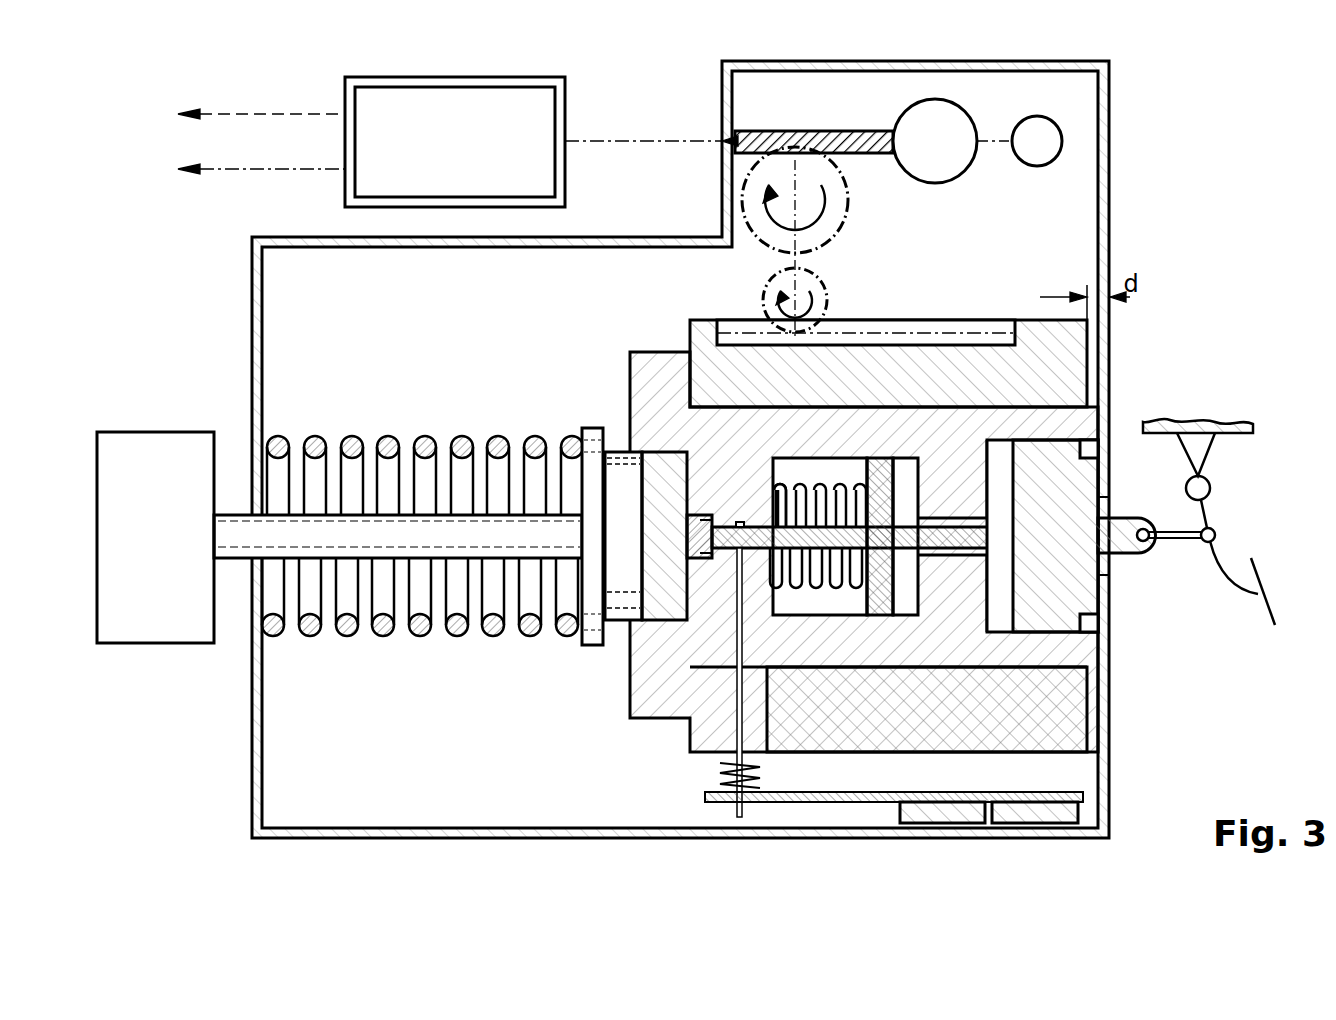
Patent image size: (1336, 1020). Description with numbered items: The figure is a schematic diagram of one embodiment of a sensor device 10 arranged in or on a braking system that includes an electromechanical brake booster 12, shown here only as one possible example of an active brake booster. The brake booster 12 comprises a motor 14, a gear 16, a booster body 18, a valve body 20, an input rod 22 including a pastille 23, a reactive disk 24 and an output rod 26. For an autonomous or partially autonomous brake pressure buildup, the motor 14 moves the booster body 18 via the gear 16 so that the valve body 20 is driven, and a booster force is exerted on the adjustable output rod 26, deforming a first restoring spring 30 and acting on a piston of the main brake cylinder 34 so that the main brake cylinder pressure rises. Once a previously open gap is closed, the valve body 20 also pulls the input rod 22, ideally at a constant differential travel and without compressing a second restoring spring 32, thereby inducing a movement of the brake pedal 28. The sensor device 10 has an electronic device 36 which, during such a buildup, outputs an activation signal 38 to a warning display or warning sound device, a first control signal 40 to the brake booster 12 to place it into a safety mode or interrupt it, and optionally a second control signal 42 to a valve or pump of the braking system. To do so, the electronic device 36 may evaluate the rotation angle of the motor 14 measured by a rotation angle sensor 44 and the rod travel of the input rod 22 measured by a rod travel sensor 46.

The sensor device 10 is at (568, 80).
The electromechanical brake booster 12 is at (252, 810).
The motor 14 is at (935, 185).
The gear 16 is at (812, 262).
The booster body 18 is at (1068, 368).
The valve body 20 is at (1088, 418).
The input rod 22 is at (1083, 600).
The pastille 23 is at (708, 518).
The reactive disk 24 is at (660, 583).
The output rod 26 is at (490, 535).
The brake pedal 28 is at (1215, 545).
The first restoring spring 30 is at (345, 632).
The second restoring spring 32 is at (836, 585).
The main brake cylinder 34 is at (152, 646).
The electronic device 36 is at (352, 98).
The activation signal 38 is at (232, 112).
The first control signal 40 is at (646, 148).
The second control signal 42 is at (230, 172).
The rotation angle sensor 44 is at (1037, 168).
The rod travel sensor 46 is at (940, 814).